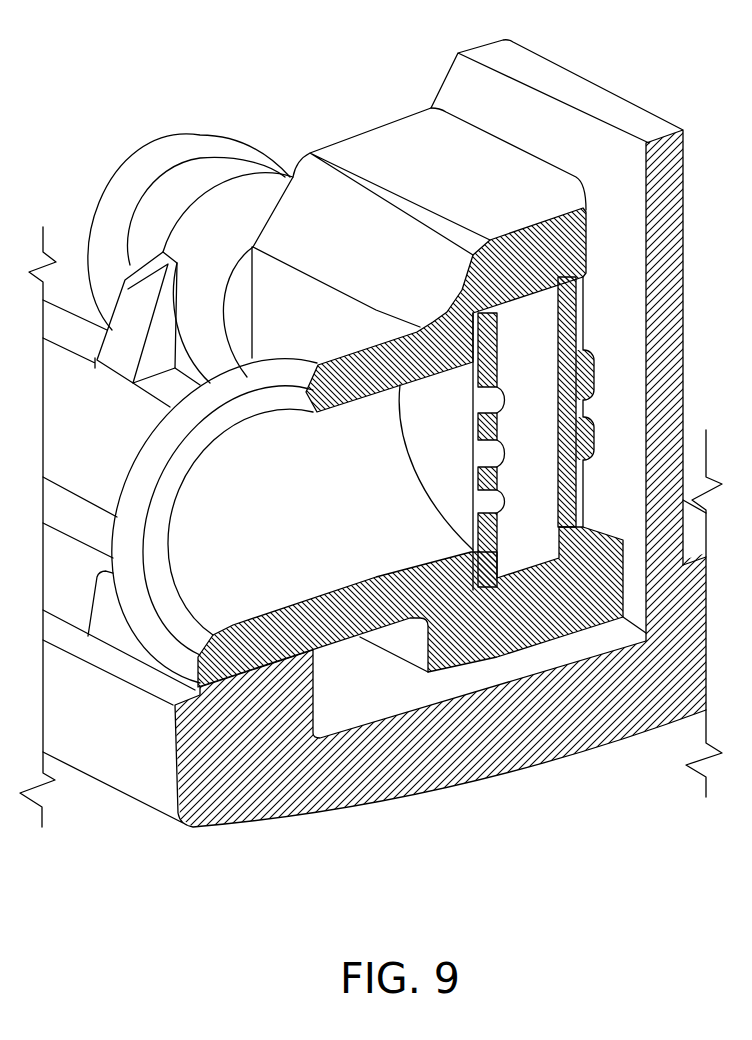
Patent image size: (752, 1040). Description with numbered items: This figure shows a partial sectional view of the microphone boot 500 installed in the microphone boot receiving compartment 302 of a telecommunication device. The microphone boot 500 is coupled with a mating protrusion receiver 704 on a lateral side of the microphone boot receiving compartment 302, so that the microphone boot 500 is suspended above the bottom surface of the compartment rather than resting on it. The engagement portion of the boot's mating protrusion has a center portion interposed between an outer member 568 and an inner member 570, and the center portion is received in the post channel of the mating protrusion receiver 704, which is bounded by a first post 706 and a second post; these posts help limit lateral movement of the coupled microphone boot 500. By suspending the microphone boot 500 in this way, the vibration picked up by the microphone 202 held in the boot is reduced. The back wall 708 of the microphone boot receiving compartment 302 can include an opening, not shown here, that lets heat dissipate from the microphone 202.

The microphone 202 is at (548, 492).
The microphone boot receiving compartment 302 is at (383, 692).
The microphone boot 500 is at (389, 147).
The outer member 568 is at (187, 162).
The inner member 570 is at (262, 198).
The mating protrusion receiver 704 is at (118, 335).
The first post 706 is at (118, 637).
The back wall 708 is at (599, 105).